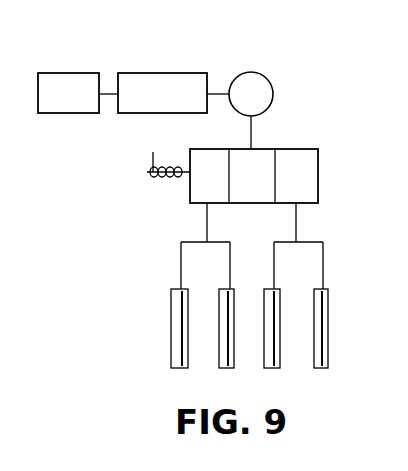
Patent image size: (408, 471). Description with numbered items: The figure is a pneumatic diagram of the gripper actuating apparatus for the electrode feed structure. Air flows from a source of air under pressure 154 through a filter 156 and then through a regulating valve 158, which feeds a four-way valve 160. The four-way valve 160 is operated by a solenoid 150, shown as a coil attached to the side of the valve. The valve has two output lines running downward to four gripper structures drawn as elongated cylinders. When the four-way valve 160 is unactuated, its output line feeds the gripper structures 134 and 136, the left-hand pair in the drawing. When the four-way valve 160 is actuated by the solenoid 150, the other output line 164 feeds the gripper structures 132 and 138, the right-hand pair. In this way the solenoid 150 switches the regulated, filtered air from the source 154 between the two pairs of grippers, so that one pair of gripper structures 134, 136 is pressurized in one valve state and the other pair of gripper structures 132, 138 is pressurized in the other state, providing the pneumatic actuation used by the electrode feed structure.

The source of air under pressure 154 is at (68, 73).
The filter 156 is at (163, 73).
The regulating valve 158 is at (264, 77).
The four-way valve 160 is at (298, 149).
The solenoid 150 is at (170, 180).
The output line 164 is at (297, 228).
The gripper structure 134 is at (171, 310).
The gripper structure 136 is at (204, 341).
The gripper structure 132 is at (276, 368).
The gripper structure 138 is at (328, 326).